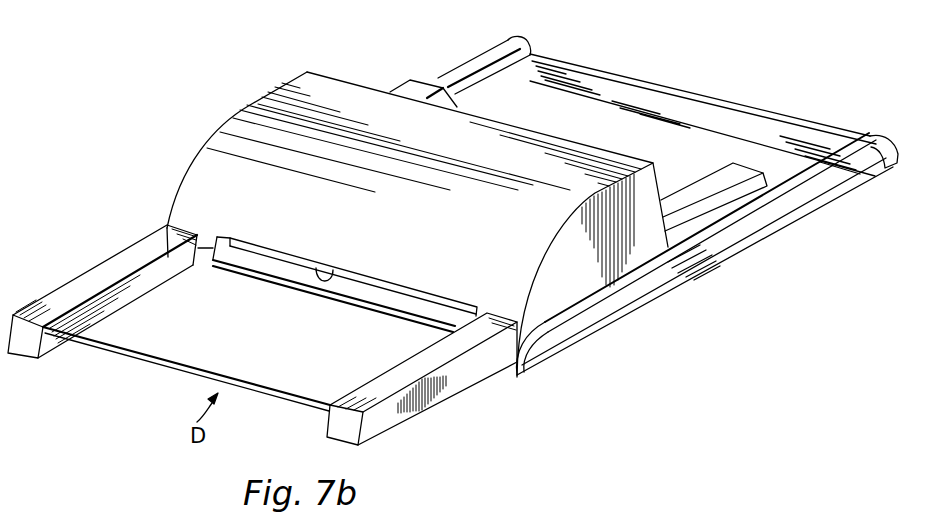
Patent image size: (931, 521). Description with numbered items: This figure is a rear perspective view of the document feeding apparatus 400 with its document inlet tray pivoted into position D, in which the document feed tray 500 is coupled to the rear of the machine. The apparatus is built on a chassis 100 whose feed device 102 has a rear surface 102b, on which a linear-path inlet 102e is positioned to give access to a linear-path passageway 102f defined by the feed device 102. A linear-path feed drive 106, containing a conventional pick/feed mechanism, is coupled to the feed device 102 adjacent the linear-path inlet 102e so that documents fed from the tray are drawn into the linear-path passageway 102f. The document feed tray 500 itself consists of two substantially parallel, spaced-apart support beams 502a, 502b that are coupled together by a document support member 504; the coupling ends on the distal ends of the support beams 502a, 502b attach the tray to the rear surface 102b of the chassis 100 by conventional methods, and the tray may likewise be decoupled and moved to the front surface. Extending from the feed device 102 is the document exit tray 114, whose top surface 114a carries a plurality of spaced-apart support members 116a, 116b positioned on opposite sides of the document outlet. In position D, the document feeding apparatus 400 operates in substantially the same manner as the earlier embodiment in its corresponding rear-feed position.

The chassis 100 is at (135, 107).
The feed device 102 is at (326, 85).
The rear surface 102b is at (185, 219).
The linear-path inlet 102e is at (296, 267).
The linear-path passageway 102f is at (394, 296).
The linear-path feed drive 106 is at (323, 272).
The document exit tray 114 is at (702, 97).
The top surface 114a is at (625, 88).
The support member 116a is at (706, 192).
The support member 116b is at (409, 86).
The document feeding apparatus 400 is at (397, 446).
The document feed tray 500 is at (140, 242).
The support beam 502a is at (458, 381).
The support beam 502b is at (87, 283).
The document support member 504 is at (207, 321).